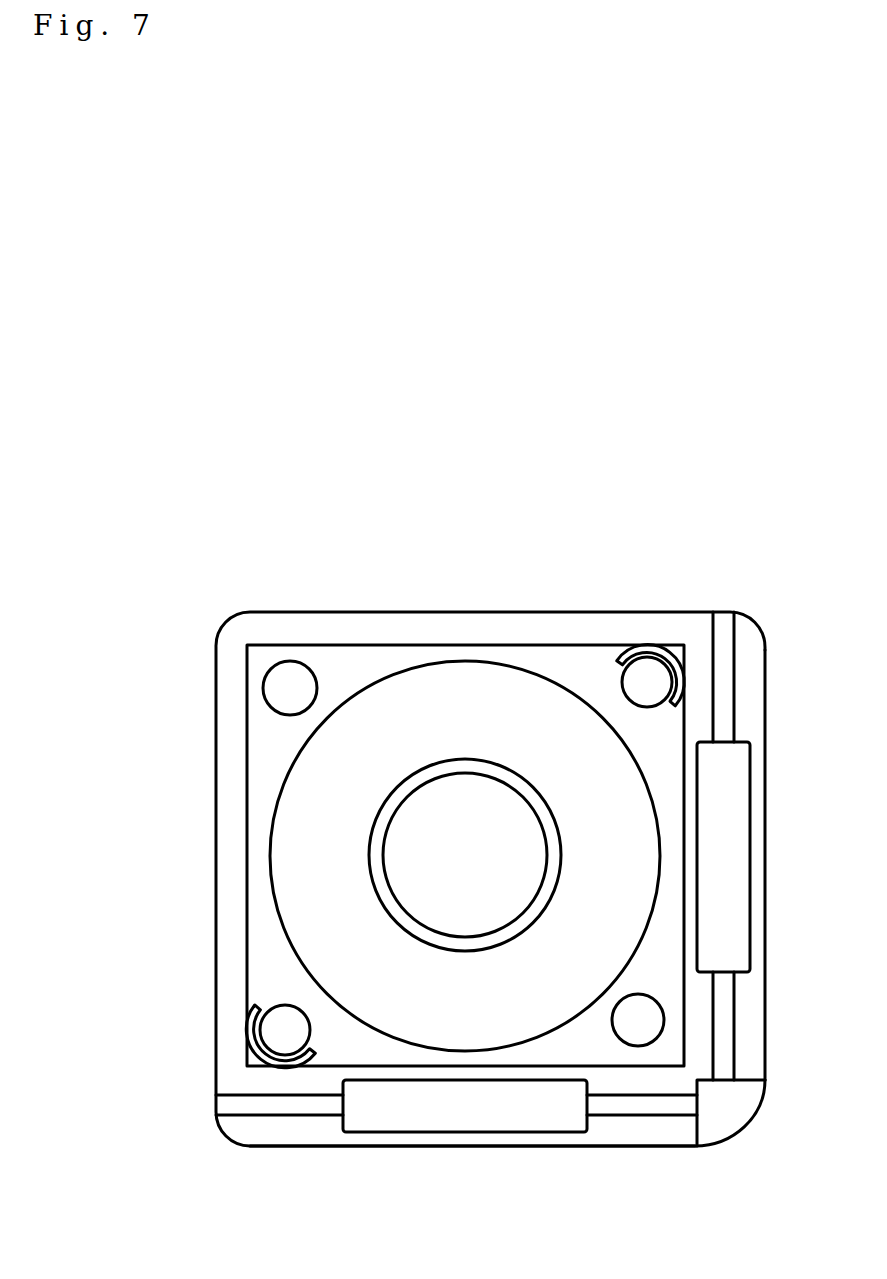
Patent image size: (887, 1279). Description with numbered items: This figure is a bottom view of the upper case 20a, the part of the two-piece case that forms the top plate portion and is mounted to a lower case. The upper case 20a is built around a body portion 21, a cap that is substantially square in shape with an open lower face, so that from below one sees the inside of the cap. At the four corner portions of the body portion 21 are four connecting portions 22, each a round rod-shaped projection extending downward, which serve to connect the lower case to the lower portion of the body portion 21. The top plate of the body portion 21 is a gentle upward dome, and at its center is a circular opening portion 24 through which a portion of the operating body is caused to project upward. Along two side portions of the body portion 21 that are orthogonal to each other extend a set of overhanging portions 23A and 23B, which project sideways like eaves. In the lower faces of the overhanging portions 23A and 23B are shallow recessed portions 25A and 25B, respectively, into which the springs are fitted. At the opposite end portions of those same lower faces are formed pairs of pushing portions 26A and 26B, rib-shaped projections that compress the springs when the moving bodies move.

The upper case 20a is at (221, 605).
The body portion 21 is at (481, 612).
The connecting portions 22 is at (305, 663).
The overhanging portion 23A is at (282, 1147).
The overhanging portion 23B is at (765, 714).
The circular opening portion 24 is at (398, 851).
The recessed portion 25A is at (468, 1133).
The recessed portion 25B is at (733, 872).
The pushing portions 26A is at (245, 1113).
The pushing portions 26B is at (725, 665).